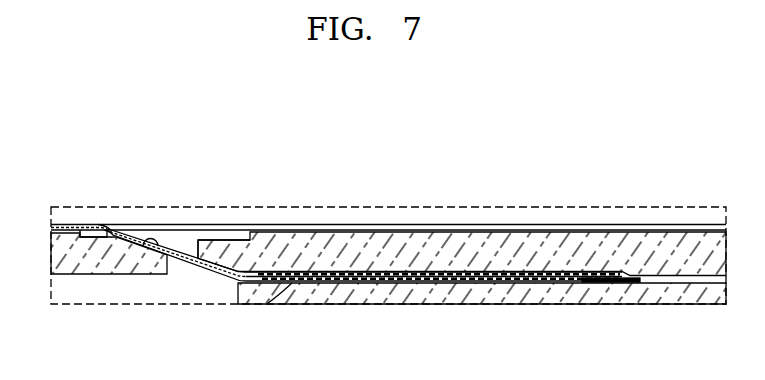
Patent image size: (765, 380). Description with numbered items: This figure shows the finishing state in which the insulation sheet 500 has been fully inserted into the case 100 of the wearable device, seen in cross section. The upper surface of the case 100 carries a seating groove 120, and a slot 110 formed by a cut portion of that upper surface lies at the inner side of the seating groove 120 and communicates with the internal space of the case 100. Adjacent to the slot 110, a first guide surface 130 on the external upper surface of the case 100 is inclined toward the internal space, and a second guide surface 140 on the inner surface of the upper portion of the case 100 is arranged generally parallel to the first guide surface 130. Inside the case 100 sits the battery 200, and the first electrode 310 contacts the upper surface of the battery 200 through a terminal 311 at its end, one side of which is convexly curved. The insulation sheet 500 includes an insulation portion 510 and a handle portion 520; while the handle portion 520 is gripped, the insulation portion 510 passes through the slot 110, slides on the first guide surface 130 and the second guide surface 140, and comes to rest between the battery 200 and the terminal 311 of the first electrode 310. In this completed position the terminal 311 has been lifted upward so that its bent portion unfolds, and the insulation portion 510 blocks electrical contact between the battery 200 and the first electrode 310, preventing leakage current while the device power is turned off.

The case 100 is at (455, 232).
The slot 110 is at (197, 243).
The seating groove 120 is at (110, 237).
The first guide surface 130 is at (145, 245).
The second guide surface 140 is at (201, 257).
The battery 200 is at (328, 295).
The first electrode 310 is at (427, 282).
The terminal 311 is at (588, 284).
The insulation sheet 500 is at (68, 225).
The insulation portion 510 is at (180, 247).
The handle portion 520 is at (87, 230).